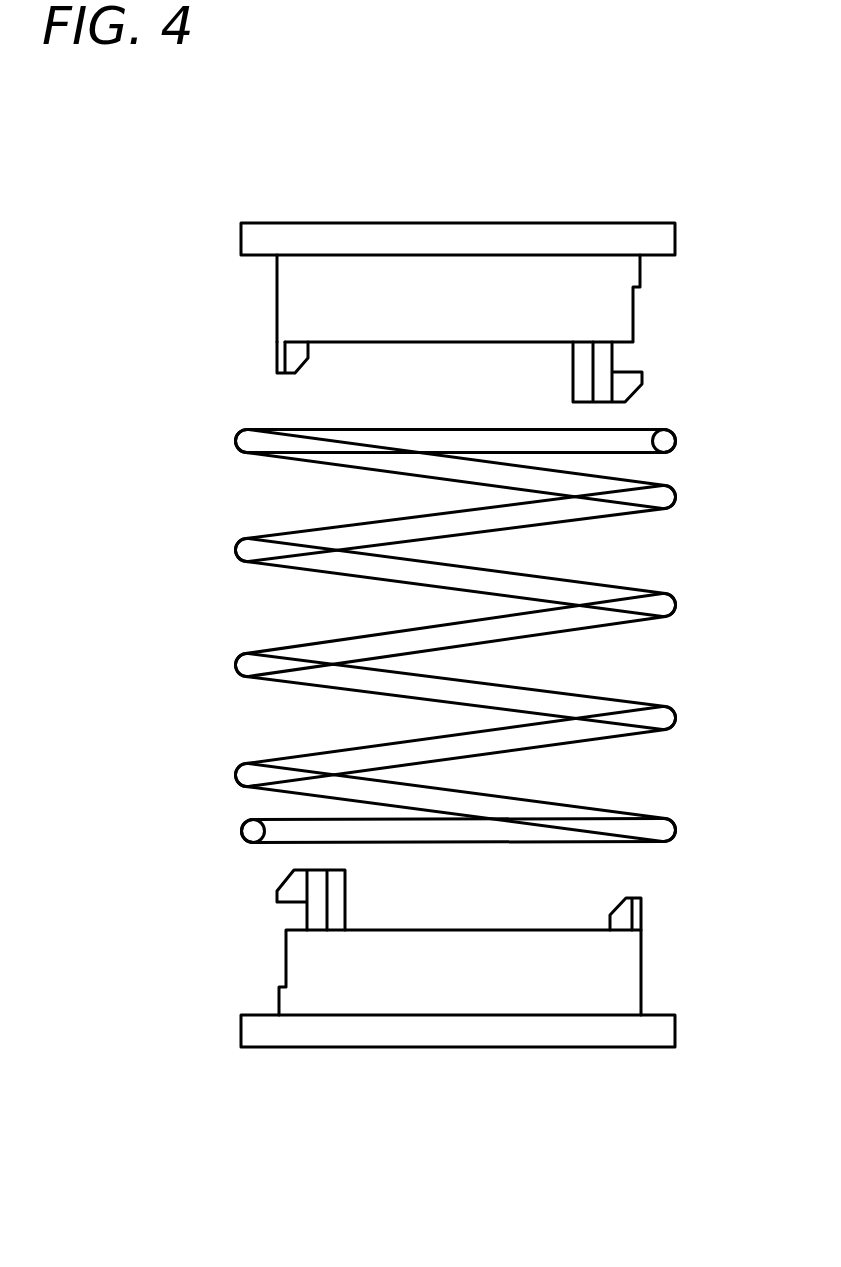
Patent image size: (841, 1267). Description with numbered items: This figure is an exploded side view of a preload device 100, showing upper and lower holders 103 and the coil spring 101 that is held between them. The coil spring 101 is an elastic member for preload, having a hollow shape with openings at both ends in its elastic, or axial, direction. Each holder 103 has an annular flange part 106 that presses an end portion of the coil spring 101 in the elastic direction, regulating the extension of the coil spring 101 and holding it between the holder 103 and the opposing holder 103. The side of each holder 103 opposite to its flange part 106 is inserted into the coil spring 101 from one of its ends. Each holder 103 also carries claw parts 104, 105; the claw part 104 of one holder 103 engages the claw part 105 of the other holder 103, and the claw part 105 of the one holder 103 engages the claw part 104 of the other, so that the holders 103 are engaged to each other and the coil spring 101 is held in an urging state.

The preload device 100 is at (176, 205).
The coil spring 101 is at (262, 554).
The holder 103 is at (492, 293).
The claw part 104 is at (295, 360).
The claw part 105 is at (620, 387).
The annular flange part 106 is at (318, 241).